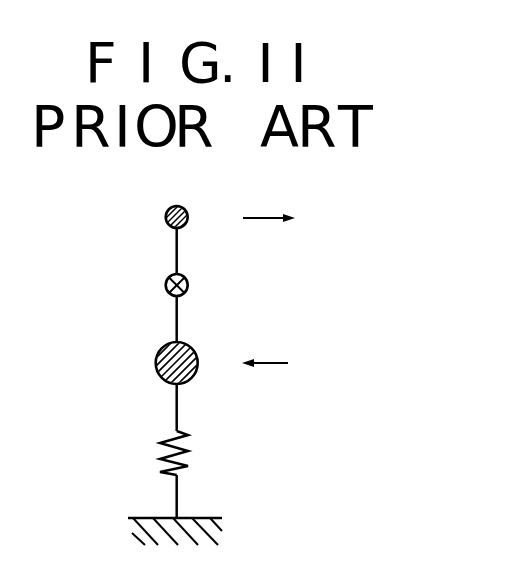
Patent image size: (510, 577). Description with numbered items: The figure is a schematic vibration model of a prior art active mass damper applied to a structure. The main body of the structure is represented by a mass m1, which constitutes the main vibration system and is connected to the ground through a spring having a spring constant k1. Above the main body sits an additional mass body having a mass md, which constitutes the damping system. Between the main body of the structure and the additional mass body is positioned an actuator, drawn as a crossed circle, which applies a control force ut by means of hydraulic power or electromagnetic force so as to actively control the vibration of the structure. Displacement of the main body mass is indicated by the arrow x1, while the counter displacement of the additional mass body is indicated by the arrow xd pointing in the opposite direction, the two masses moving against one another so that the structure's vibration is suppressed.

The mass of additional mass body md is at (175, 203).
The control force u(t) ut is at (209, 287).
The mass of main body of structure m1 is at (131, 355).
The spring constant of main body of structure k1 is at (142, 448).
The counter displacement of additional mass xd is at (288, 219).
The displacement of main body mass x1 is at (289, 382).